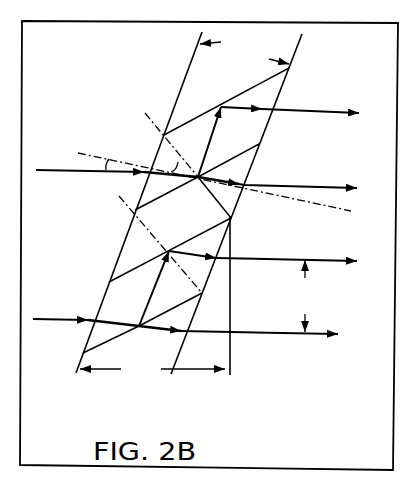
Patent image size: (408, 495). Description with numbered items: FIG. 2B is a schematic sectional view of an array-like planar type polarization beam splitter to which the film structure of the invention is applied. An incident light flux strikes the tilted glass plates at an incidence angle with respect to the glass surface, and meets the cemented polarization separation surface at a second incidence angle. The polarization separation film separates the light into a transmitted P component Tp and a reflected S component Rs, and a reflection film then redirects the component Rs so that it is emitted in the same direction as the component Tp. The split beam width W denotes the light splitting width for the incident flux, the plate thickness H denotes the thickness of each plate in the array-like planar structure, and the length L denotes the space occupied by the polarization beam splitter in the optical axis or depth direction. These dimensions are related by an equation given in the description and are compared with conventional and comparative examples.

The reflected S component Rs is at (293, 98).
The transmitted P component Tp is at (280, 170).
The plate thickness H is at (244, 48).
The space occupied in the depth direction L is at (152, 370).
The split beam width W is at (305, 296).